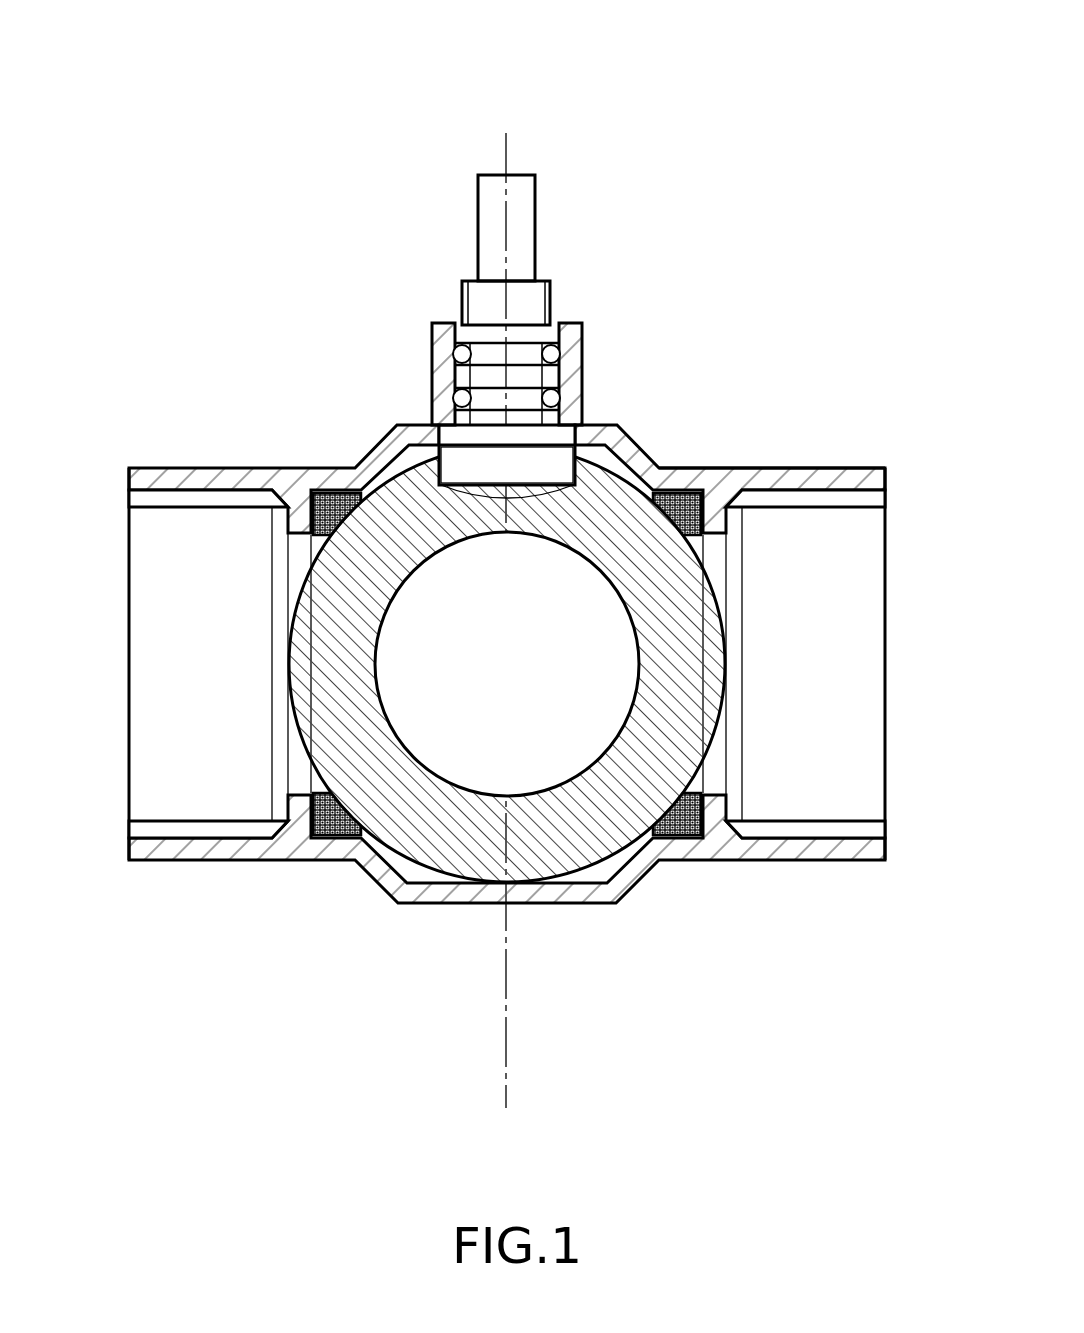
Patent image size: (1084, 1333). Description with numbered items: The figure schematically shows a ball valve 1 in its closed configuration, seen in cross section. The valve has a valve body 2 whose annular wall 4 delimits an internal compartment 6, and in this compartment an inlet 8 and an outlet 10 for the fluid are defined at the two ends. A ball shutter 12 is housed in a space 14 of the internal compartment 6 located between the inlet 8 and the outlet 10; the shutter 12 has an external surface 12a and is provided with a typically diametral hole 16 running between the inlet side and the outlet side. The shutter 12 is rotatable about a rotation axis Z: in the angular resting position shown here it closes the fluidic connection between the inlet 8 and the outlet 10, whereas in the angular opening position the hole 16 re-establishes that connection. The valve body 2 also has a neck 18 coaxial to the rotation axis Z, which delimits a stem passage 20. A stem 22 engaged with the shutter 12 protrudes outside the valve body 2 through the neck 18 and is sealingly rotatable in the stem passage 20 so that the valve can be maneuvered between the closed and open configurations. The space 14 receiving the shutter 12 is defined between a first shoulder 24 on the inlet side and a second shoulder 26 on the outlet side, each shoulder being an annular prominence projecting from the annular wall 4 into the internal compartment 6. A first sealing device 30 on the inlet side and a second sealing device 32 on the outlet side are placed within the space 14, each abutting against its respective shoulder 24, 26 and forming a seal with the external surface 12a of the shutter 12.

The ball valve 1 is at (771, 65).
The valve body 2 is at (687, 865).
The annular wall 4 is at (692, 466).
The internal compartment 6 is at (283, 548).
The inlet 8 is at (830, 552).
The outlet 10 is at (199, 788).
The ball shutter 12 is at (609, 515).
The external surface 12a is at (709, 752).
The space 14 is at (412, 872).
The diametral hole 16 is at (534, 757).
The neck 18 is at (443, 342).
The stem passage 20 is at (552, 338).
The stem 22 is at (495, 187).
The first shoulder 24 is at (714, 520).
The second shoulder 26 is at (298, 525).
The first sealing device 30 is at (698, 543).
The second sealing device 32 is at (315, 543).